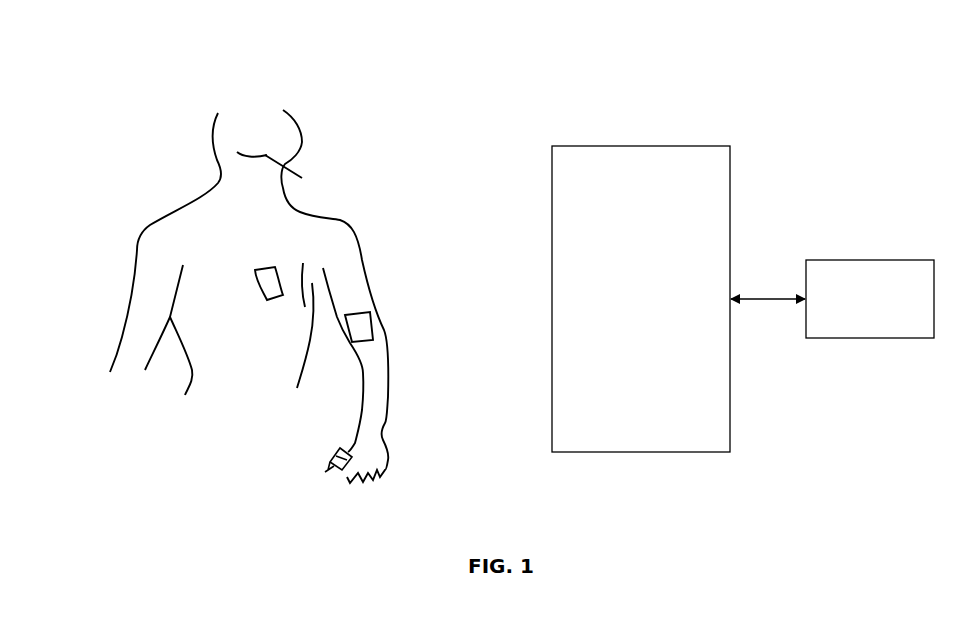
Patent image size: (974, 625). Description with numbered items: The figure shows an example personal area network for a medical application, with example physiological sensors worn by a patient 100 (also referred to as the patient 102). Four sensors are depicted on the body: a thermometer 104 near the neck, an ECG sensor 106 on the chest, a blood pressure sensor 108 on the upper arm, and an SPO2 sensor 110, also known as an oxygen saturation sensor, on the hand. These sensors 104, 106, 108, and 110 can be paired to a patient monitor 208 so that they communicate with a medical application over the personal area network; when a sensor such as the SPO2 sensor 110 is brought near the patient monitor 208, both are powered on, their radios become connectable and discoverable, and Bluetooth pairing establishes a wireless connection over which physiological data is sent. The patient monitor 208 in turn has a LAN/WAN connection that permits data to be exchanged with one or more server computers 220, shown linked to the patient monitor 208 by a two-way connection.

The patient 100 is at (103, 48).
The patient 102 is at (338, 208).
The thermometer 104 is at (293, 167).
The ECG sensor 106 is at (263, 268).
The blood pressure sensor 108 is at (367, 328).
The SPO2 sensor 110 is at (342, 455).
The patient monitor 208 is at (641, 299).
The server computer 220 is at (870, 299).